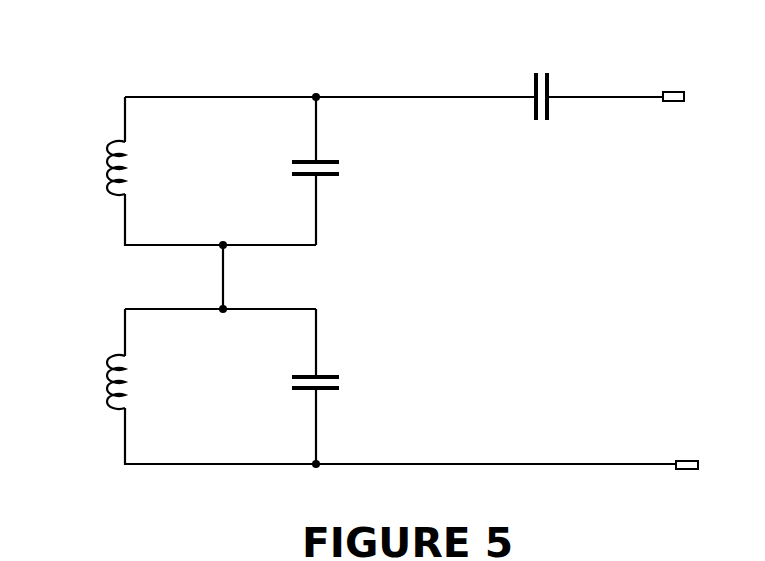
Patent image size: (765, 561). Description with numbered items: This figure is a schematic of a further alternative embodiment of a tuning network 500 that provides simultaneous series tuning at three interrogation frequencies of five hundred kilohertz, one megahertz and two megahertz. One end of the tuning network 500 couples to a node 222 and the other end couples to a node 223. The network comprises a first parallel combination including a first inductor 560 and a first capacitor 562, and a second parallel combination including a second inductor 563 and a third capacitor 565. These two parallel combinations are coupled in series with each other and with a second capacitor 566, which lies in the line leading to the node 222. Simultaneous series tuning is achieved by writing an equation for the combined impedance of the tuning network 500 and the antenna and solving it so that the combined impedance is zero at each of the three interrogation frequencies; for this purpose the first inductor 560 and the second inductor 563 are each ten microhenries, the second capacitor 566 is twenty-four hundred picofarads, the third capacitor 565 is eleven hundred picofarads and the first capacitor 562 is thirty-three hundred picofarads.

The tuning network 500 is at (70, 65).
The inductor L1 560 is at (108, 185).
The capacitor C1 562 is at (343, 167).
The inductor L2 563 is at (110, 397).
The capacitor C3 565 is at (343, 383).
The capacitor C2 566 is at (543, 122).
The node 222 is at (679, 105).
The node 223 is at (687, 460).